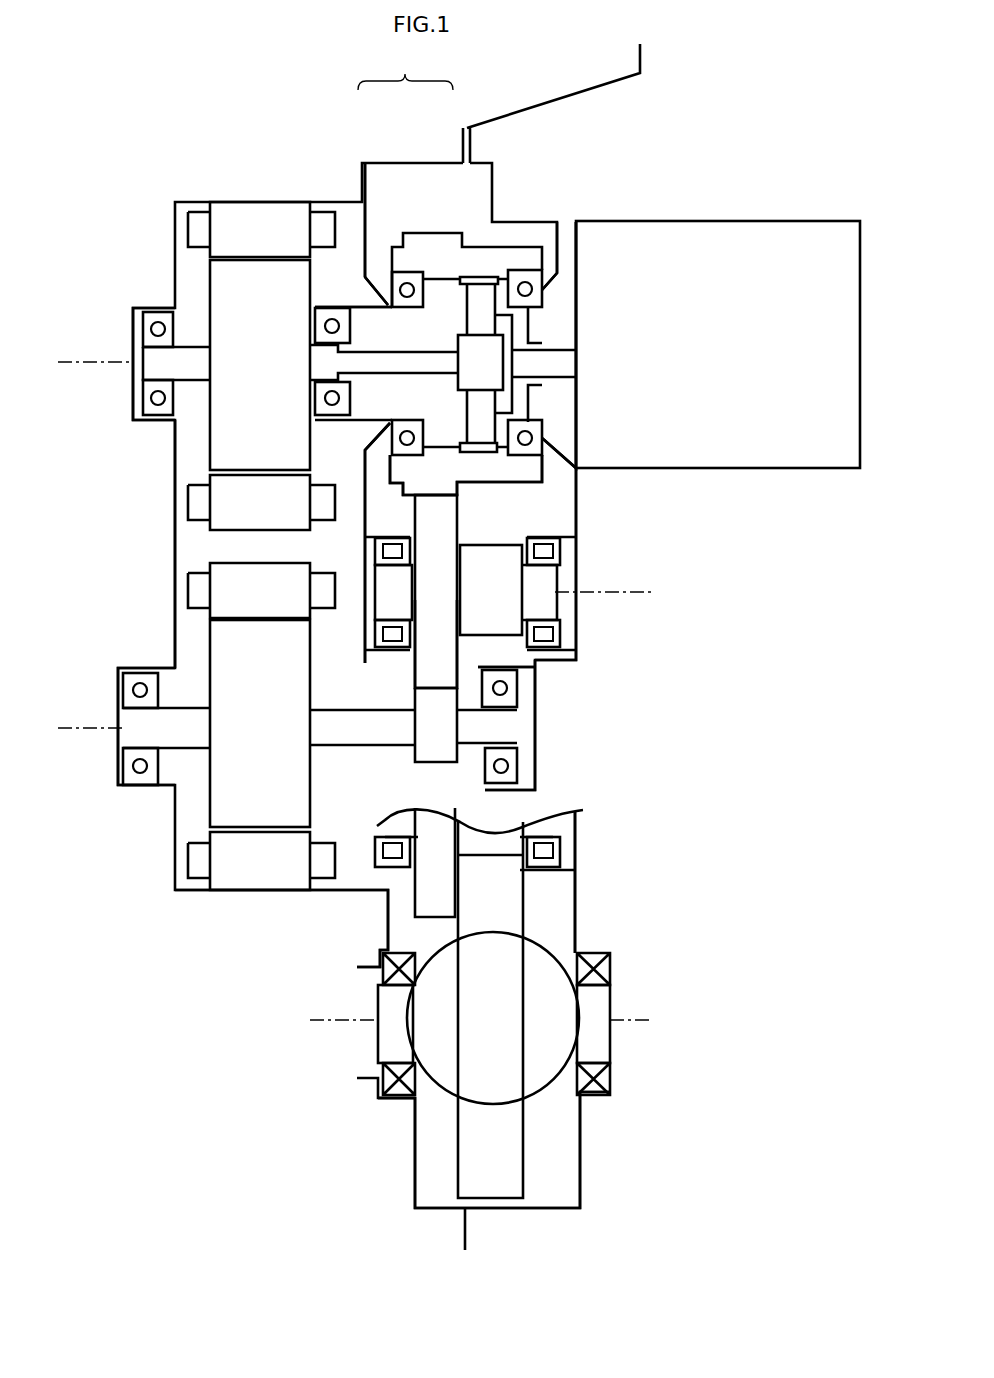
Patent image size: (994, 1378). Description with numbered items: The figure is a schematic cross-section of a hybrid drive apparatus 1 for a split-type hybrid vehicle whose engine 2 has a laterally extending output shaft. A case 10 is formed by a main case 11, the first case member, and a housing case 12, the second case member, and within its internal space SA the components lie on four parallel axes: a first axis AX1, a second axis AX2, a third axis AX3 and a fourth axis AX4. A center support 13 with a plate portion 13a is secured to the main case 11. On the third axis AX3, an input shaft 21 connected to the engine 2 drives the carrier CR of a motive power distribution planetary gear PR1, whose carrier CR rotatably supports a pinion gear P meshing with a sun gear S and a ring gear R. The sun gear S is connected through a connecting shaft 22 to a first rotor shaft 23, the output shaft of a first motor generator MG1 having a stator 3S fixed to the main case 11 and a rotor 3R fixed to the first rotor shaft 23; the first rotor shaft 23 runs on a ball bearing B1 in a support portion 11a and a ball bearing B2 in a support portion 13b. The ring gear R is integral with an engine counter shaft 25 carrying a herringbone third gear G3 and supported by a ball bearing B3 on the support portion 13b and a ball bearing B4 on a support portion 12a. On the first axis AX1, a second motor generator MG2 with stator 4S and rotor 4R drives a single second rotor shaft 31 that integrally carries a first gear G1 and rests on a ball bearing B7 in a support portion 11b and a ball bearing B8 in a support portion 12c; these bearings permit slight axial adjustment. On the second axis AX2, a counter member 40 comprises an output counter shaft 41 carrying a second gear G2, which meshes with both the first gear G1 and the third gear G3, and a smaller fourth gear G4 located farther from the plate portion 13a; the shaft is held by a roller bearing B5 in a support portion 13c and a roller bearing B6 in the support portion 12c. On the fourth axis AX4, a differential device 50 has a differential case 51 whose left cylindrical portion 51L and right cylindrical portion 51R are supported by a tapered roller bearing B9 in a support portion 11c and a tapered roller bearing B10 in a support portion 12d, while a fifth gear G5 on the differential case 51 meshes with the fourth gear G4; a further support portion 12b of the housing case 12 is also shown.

The hybrid drive apparatus 1 is at (292, 53).
The engine 2 is at (823, 220).
The case 10 is at (405, 71).
The main case 11 is at (362, 164).
The support portion 11a is at (145, 308).
The support portion 11b is at (150, 786).
The support portion 11c is at (400, 950).
The housing case 12 is at (490, 114).
The support portion 12a is at (545, 425).
The support wall 12b is at (555, 545).
The support portion 12c is at (522, 790).
The support portion 12d is at (597, 1095).
The center support 13 is at (362, 215).
The plate portion 13a is at (370, 220).
The support portion 13b is at (388, 300).
The support portion 13c is at (368, 522).
The input shaft 21 is at (565, 364).
The connecting shaft 22 is at (387, 368).
The first rotor shaft 23 is at (148, 370).
The engine counter shaft 25 is at (532, 482).
The second rotor shaft 31 is at (145, 738).
The counter member 40 is at (489, 591).
The output counter shaft 41 is at (556, 605).
The differential device 50 is at (508, 1010).
The differential case 51 is at (440, 1085).
The left cylindrical portion 51L is at (392, 1045).
The right cylindrical portion 51R is at (605, 1040).
The first motor generator MG1 is at (197, 362).
The second motor generator MG2 is at (197, 724).
The stator 3S is at (215, 232).
The rotor 3R is at (215, 282).
The stator 4S is at (215, 595).
The rotor 4R is at (215, 645).
The motive power distribution planetary gear PR1 is at (507, 342).
The ring gear R is at (462, 281).
The pinion gear P is at (472, 312).
The sun gear S is at (470, 378).
The carrier CR is at (525, 325).
The internal space SA is at (178, 447).
The first gear G1 is at (422, 755).
The second gear G2 is at (422, 675).
The third gear G3 is at (459, 486).
The fourth gear G4 is at (496, 560).
The fifth gear G5 is at (510, 875).
The ball bearing B1 is at (150, 333).
The ball bearing B2 is at (335, 408).
The ball bearing B3 is at (412, 275).
The ball bearing B4 is at (530, 283).
The roller bearing B5 is at (385, 648).
The roller bearing B6 is at (547, 648).
The ball bearing B7 is at (140, 772).
The ball bearing B8 is at (512, 767).
The tapered roller bearing B9 is at (388, 970).
The tapered roller bearing B10 is at (612, 975).
The first axis AX1 is at (68, 732).
The second axis AX2 is at (627, 594).
The third axis AX3 is at (72, 364).
The fourth axis AX4 is at (504, 1022).